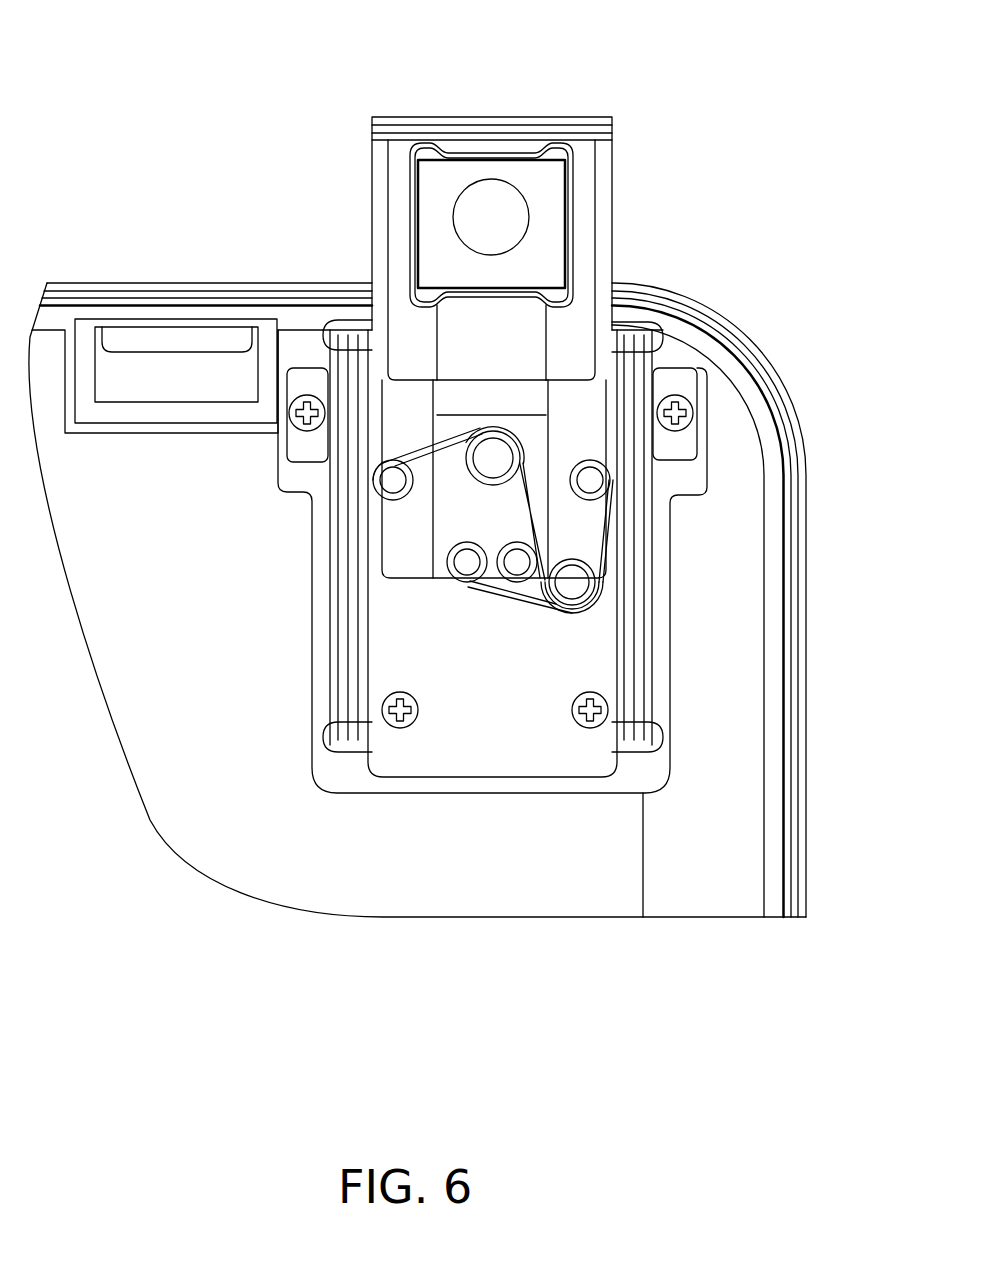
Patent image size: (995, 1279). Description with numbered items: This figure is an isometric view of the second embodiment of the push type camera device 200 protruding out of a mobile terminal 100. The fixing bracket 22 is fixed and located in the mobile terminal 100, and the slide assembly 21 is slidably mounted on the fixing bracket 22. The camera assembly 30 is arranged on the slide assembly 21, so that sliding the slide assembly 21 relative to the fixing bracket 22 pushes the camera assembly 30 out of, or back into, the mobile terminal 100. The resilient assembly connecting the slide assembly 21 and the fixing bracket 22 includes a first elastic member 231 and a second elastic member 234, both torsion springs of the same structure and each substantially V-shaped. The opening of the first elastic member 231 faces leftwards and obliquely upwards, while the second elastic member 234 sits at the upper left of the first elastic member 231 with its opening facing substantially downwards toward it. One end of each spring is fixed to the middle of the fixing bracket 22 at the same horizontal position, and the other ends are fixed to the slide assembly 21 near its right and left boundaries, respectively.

The mobile terminal 100 is at (253, 855).
The push type camera device 200 is at (311, 54).
The slide assembly 21 is at (583, 182).
The fixing bracket 22 is at (587, 650).
The camera assembly 30 is at (545, 250).
The first elastic member 231 is at (600, 595).
The second elastic member 234 is at (522, 452).